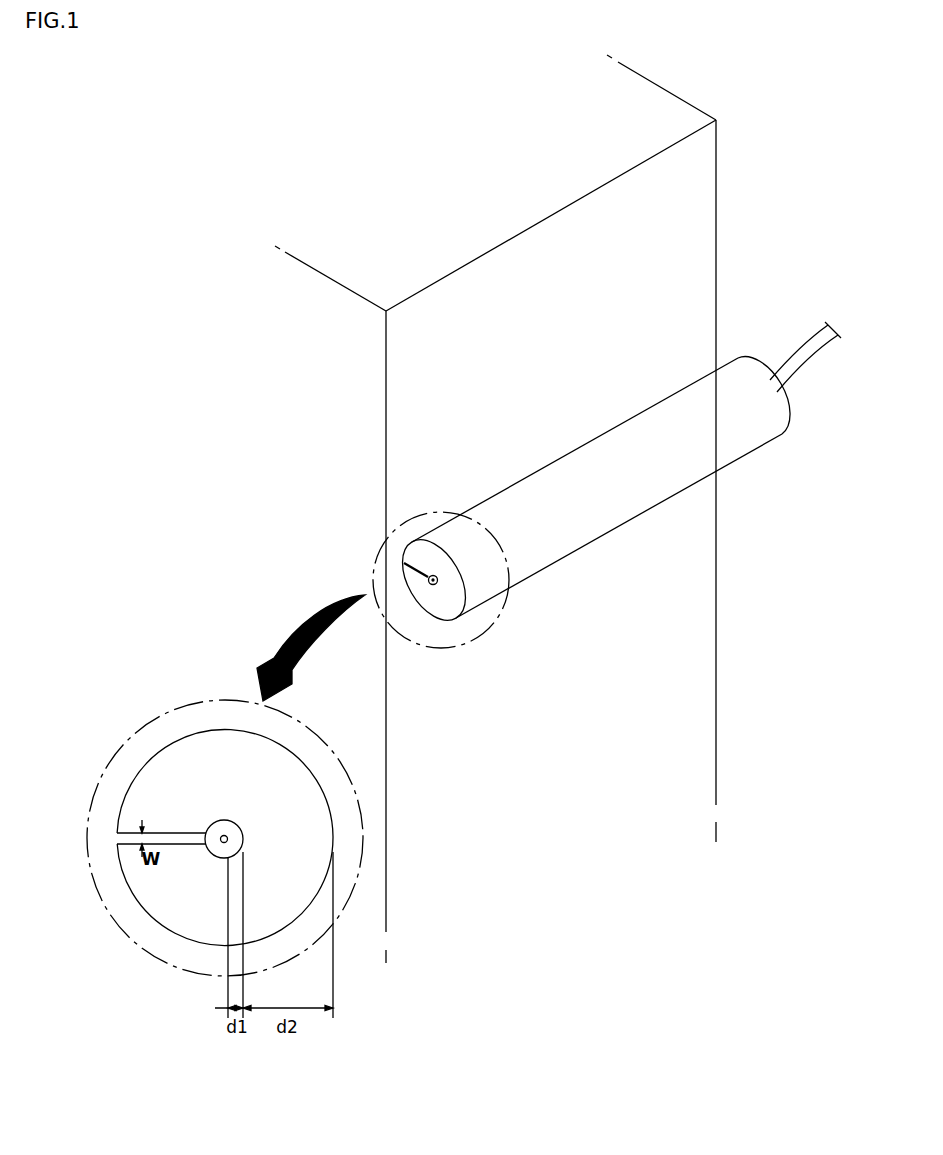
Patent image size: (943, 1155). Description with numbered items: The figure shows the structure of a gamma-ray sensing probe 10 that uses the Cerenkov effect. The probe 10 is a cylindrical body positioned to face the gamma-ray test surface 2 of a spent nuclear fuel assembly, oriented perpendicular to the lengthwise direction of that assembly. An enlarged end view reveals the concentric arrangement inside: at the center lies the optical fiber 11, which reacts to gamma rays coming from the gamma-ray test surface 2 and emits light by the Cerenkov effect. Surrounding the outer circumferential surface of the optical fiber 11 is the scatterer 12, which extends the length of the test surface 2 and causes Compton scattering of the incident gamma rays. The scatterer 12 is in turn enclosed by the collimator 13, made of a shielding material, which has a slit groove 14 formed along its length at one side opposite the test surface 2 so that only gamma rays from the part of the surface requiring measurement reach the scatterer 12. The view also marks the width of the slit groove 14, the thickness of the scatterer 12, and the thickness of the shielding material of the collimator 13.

The gamma-ray test surface 2 is at (687, 268).
The gamma-ray sensing probe 10 is at (662, 513).
The optical fiber 11 is at (224, 836).
The scatterer 12 is at (213, 848).
The collimator 13 is at (190, 925).
The slit groove 14 is at (115, 838).